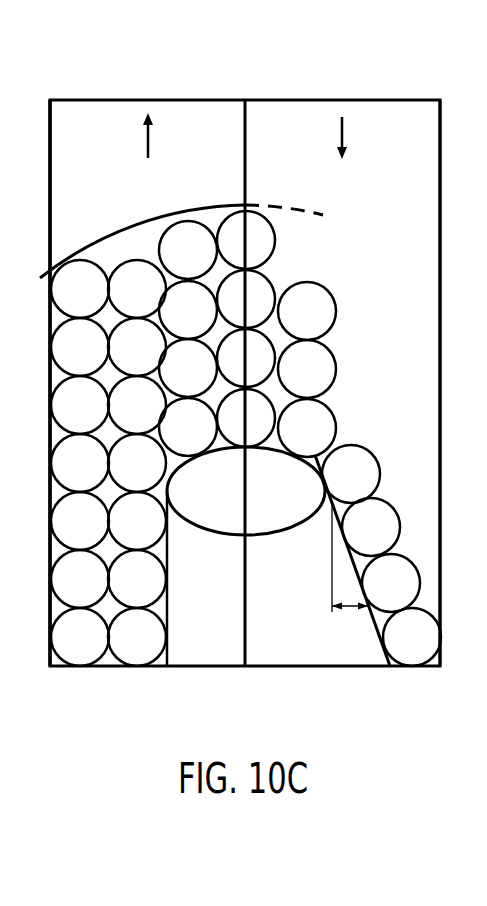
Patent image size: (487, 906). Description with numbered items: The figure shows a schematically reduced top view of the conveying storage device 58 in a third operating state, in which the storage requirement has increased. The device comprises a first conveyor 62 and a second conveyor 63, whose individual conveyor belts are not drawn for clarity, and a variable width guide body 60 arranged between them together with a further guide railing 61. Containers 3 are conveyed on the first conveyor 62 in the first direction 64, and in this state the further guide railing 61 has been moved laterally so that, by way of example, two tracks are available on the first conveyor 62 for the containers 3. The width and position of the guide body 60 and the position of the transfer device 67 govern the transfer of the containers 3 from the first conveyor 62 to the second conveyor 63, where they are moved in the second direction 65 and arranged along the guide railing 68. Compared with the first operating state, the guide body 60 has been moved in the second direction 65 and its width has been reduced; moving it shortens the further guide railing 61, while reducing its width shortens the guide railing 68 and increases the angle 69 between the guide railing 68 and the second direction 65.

The conveying storage device 58 is at (114, 63).
The first conveyor 62 is at (41, 203).
The second conveyor 63 is at (0, 292).
The transfer device 67 is at (113, 237).
The first direction 64 is at (150, 141).
The second direction 65 is at (345, 132).
The containers 3 is at (62, 640).
The further guide railing 61 is at (170, 613).
The guide body 60 is at (275, 535).
The angle 69 is at (350, 608).
The guide railing 68 is at (373, 625).